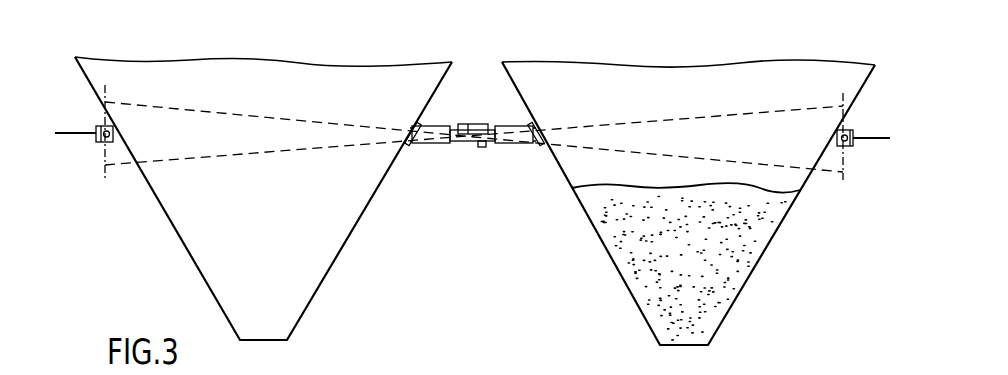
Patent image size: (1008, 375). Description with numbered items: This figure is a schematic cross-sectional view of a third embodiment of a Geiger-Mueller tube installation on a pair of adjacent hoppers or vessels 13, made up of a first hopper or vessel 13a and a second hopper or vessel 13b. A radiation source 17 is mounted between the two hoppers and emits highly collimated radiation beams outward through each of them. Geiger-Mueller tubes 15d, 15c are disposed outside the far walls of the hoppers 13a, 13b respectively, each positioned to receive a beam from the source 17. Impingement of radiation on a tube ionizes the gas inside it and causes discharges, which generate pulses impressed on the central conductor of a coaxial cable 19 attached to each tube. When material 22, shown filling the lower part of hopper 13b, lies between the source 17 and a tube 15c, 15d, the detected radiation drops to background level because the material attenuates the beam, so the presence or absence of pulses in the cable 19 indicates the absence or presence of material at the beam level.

The hoppers or vessels 13 is at (482, 57).
The hopper or vessel 13a is at (385, 72).
The hopper or vessel 13b is at (804, 73).
The Geiger-Mueller tube 15c is at (855, 147).
The Geiger-Mueller tube 15d is at (95, 143).
The radiation source 17 is at (455, 144).
The coaxial cable 19 is at (72, 133).
The material 22 is at (623, 243).